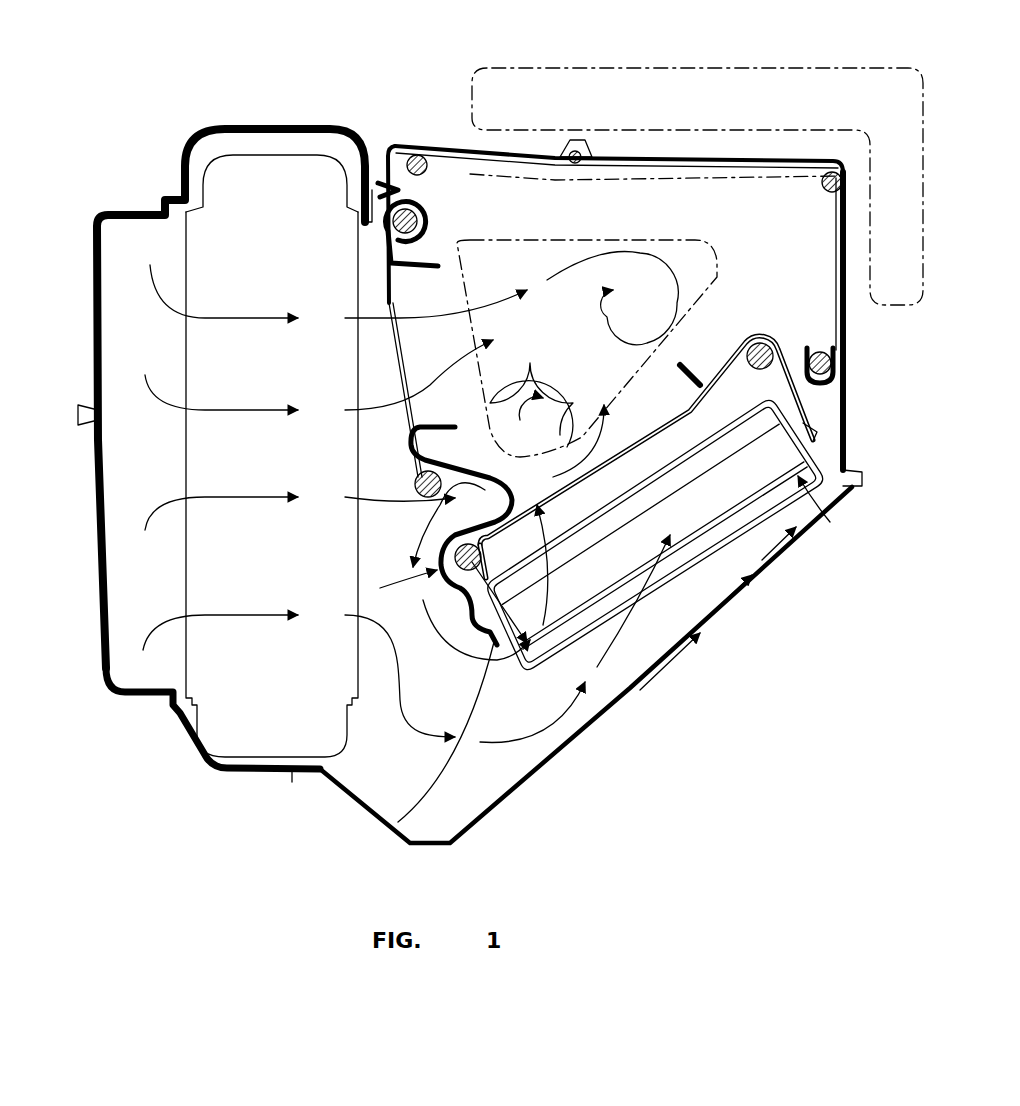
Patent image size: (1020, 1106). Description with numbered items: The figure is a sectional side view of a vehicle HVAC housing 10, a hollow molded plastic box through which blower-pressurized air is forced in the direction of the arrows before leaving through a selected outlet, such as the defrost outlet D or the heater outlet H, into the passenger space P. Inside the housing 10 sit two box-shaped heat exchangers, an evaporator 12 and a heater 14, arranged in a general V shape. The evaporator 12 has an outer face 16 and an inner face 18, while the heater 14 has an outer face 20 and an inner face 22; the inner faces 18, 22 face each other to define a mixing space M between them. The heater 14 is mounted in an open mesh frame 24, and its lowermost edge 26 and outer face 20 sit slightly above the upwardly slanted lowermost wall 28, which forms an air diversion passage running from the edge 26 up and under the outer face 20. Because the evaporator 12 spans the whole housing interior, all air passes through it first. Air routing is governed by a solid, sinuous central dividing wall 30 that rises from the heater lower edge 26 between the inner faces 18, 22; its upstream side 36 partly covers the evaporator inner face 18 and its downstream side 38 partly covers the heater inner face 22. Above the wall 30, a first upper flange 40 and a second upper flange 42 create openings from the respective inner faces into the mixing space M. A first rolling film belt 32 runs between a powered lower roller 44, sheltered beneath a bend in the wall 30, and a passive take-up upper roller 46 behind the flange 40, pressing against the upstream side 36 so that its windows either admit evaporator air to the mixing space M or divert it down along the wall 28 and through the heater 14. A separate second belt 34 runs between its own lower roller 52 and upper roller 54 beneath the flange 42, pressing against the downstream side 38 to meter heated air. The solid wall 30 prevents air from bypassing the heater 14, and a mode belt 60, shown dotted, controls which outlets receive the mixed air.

The HVAC housing 10 is at (207, 128).
The evaporator 12 is at (205, 752).
The heater 14 is at (800, 480).
The evaporator outer face 16 is at (183, 348).
The evaporator inner face 18 is at (362, 371).
The heater outer face 20 is at (730, 515).
The heater inner face 22 is at (690, 425).
The open mesh frame 24 is at (690, 572).
The heater lowermost edge 26 is at (400, 817).
The lowermost wall 28 is at (683, 648).
The central dividing wall 30 is at (400, 583).
The first rolling film belt 32 is at (398, 302).
The second rolling film belt 34 is at (682, 405).
The upstream side 36 is at (490, 460).
The downstream side 38 is at (511, 494).
The first upper flange 40 is at (438, 195).
The second upper flange 42 is at (740, 450).
The lower roller 44 is at (415, 475).
The upper roller 46 is at (372, 185).
The lower roller 52 is at (570, 655).
The upper roller 54 is at (862, 471).
The mode belt 60 is at (663, 170).
The defrost outlet D is at (490, 153).
The passenger space P is at (783, 67).
The mixing space M is at (663, 238).
The heater outlet H is at (853, 323).